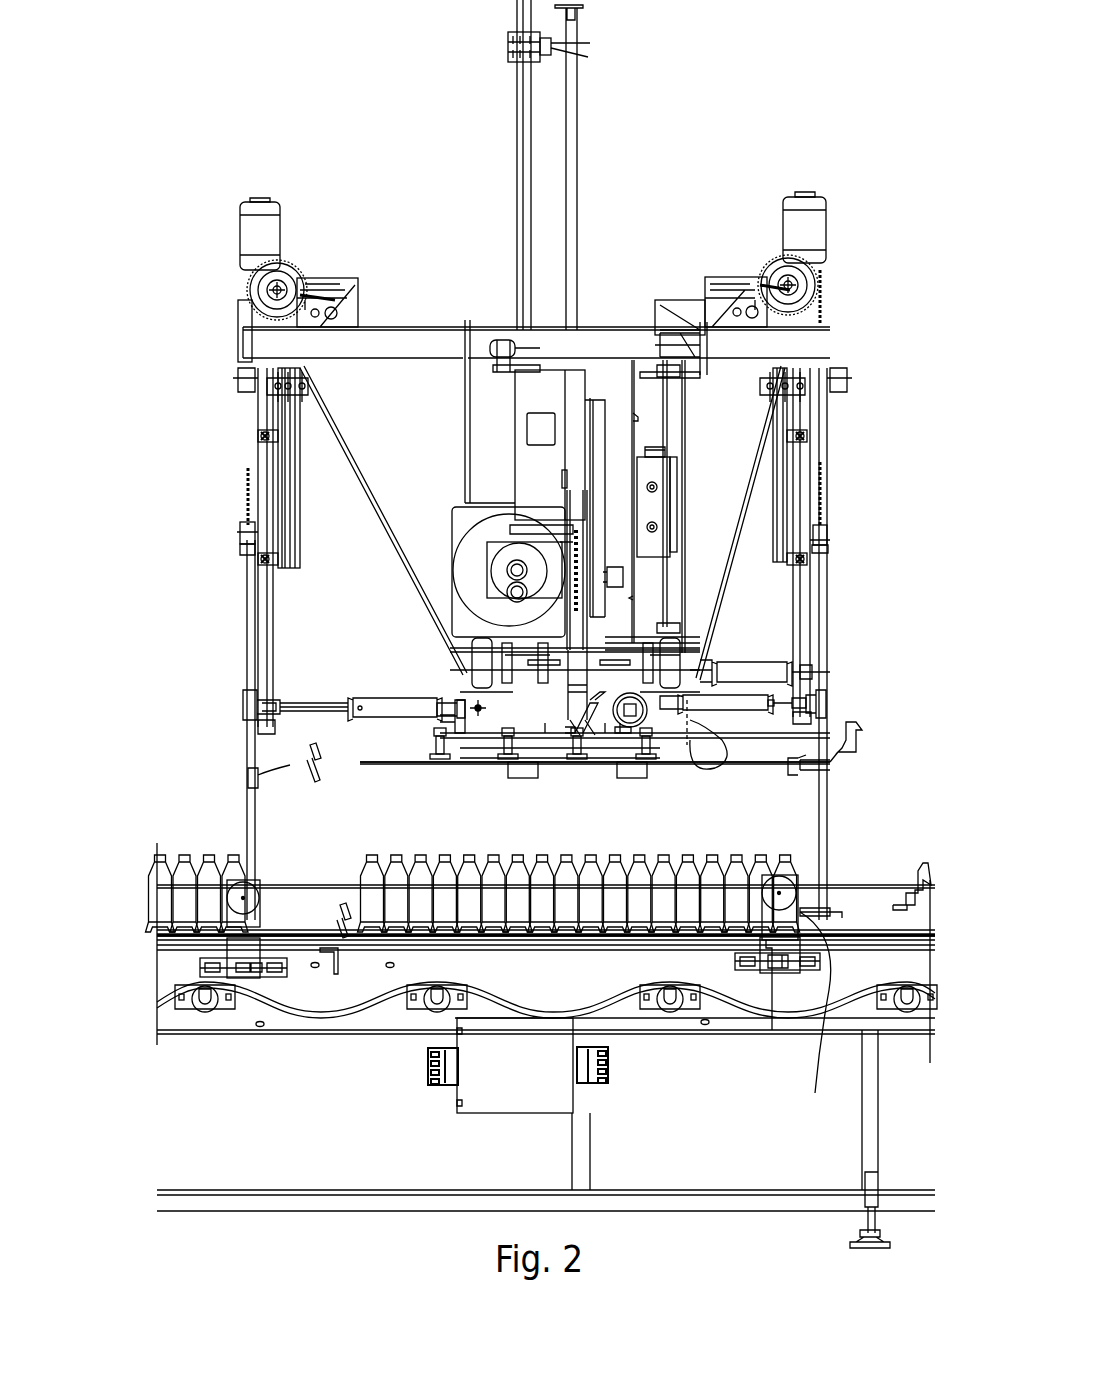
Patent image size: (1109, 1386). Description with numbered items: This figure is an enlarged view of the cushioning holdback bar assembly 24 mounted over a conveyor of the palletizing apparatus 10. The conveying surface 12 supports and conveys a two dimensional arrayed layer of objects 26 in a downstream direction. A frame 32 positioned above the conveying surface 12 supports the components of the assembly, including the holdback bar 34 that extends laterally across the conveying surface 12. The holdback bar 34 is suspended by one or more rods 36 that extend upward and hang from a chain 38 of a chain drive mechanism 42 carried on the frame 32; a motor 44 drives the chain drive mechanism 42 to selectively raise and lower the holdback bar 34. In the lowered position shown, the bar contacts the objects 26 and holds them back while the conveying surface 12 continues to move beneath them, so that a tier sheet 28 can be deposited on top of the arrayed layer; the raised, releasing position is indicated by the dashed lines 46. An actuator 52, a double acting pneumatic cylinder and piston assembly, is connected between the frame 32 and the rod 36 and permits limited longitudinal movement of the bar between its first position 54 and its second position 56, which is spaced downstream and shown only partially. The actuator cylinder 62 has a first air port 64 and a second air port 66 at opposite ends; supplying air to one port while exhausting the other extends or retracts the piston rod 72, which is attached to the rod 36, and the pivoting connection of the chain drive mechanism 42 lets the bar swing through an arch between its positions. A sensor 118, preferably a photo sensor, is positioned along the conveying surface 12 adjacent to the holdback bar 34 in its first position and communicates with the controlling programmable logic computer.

The labeling apparatus 10 is at (728, 139).
The conveying surface 12 is at (298, 925).
The cushioning holdback bar assembly 24 is at (845, 193).
The objects 26 is at (423, 848).
The tier sheet 28 is at (388, 763).
The frame 32 is at (700, 337).
The holdback bar 34 is at (822, 1030).
The rods 36 is at (825, 605).
The chain 38 is at (824, 302).
The chain drive mechanism 42 is at (782, 255).
The motor 44 is at (815, 232).
The dashed lines 46 is at (805, 754).
The actuator 52 is at (719, 705).
The first position 54 is at (832, 904).
The second position 56 is at (908, 882).
The cylinder 62 is at (735, 712).
The first air port 64 is at (682, 705).
The second air port 66 is at (772, 712).
The piston rod 72 is at (793, 715).
The sensor 118 is at (785, 893).